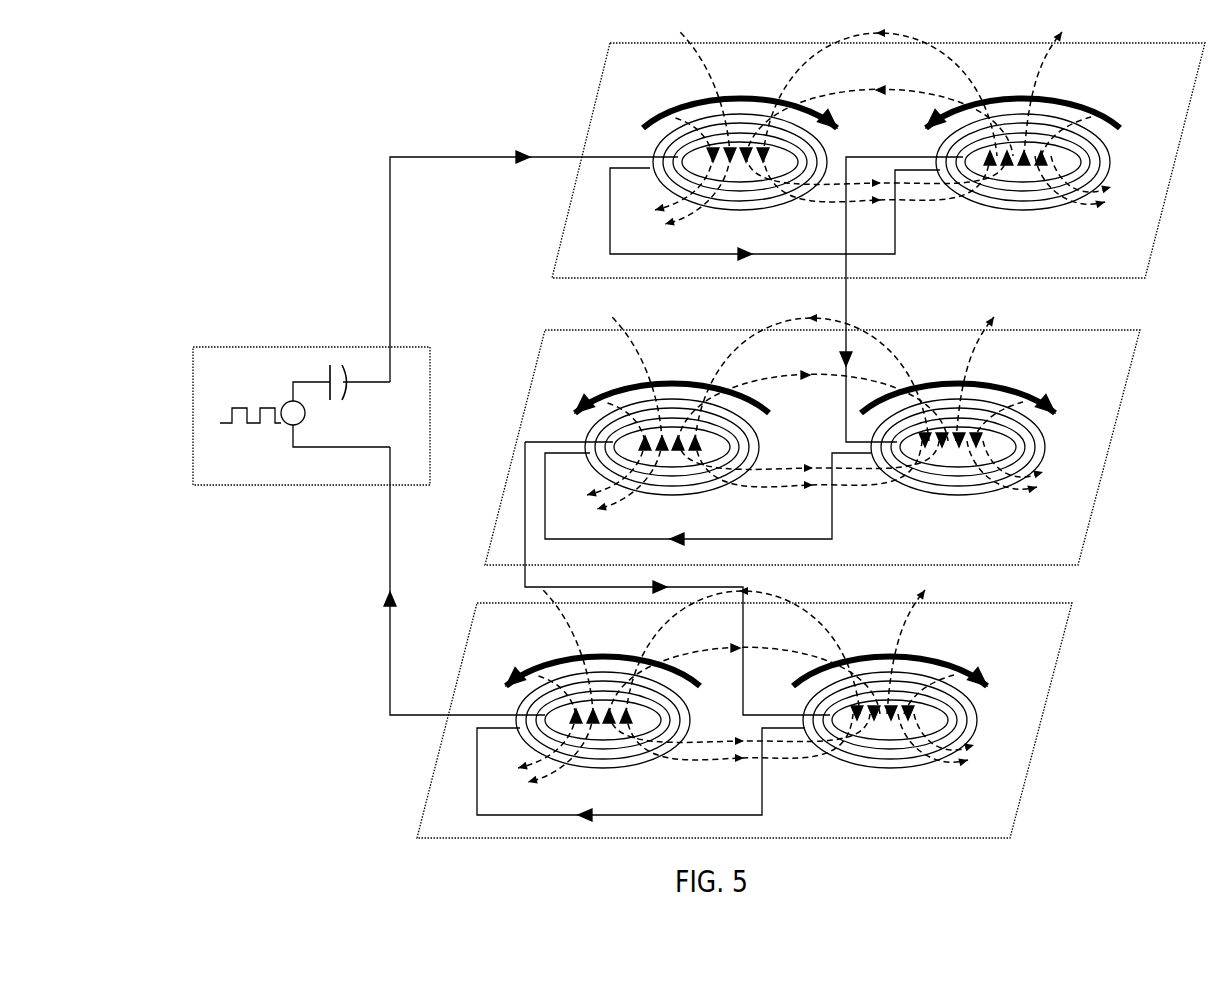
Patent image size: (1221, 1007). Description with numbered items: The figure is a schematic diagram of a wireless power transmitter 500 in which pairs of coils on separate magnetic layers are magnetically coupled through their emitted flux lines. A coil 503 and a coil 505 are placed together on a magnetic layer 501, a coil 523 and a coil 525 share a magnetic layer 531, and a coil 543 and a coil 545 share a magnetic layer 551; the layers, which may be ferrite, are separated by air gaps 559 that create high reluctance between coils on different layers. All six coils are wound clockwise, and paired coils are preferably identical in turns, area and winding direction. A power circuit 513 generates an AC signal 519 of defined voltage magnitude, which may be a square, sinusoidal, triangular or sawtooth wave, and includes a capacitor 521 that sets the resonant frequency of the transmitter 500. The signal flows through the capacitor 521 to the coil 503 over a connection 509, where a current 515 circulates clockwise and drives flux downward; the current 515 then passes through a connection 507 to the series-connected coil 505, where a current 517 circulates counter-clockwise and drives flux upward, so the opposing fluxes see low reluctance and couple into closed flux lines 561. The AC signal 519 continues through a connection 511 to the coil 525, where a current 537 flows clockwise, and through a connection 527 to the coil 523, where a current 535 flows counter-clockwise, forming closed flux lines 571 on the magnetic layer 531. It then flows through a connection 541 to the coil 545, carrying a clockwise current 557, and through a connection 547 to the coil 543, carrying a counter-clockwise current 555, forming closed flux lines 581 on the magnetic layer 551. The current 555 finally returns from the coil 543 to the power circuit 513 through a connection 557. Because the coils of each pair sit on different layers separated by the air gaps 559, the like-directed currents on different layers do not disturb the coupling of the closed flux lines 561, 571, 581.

The wireless power transmitter 500 is at (341, 246).
The magnetic layer 501 is at (1150, 258).
The coil 503 is at (755, 207).
The coil 505 is at (1045, 207).
The connection 507 is at (897, 240).
The connection 509 is at (392, 232).
The connection 511 is at (848, 298).
The power circuit 513 is at (228, 487).
The current 515 is at (737, 95).
The current 517 is at (1040, 95).
The AC signal 519 is at (256, 438).
The capacitor 521 is at (339, 407).
The coil 523 is at (690, 492).
The coil 525 is at (985, 492).
The connection 527 is at (834, 527).
The magnetic layer 531 is at (1082, 545).
The current 535 is at (660, 385).
The current 537 is at (975, 385).
The connection 541 is at (742, 632).
The coil 543 is at (620, 770).
The coil 545 is at (915, 768).
The connection 547 is at (763, 802).
The magnetic layer 551 is at (1014, 815).
The current 555 is at (602, 655).
The current / connection 557 is at (392, 538).
The air gap 559 is at (622, 298).
The closed flux lines 561 is at (902, 86).
The closed flux lines 571 is at (794, 374).
The closed flux lines 581 is at (767, 650).